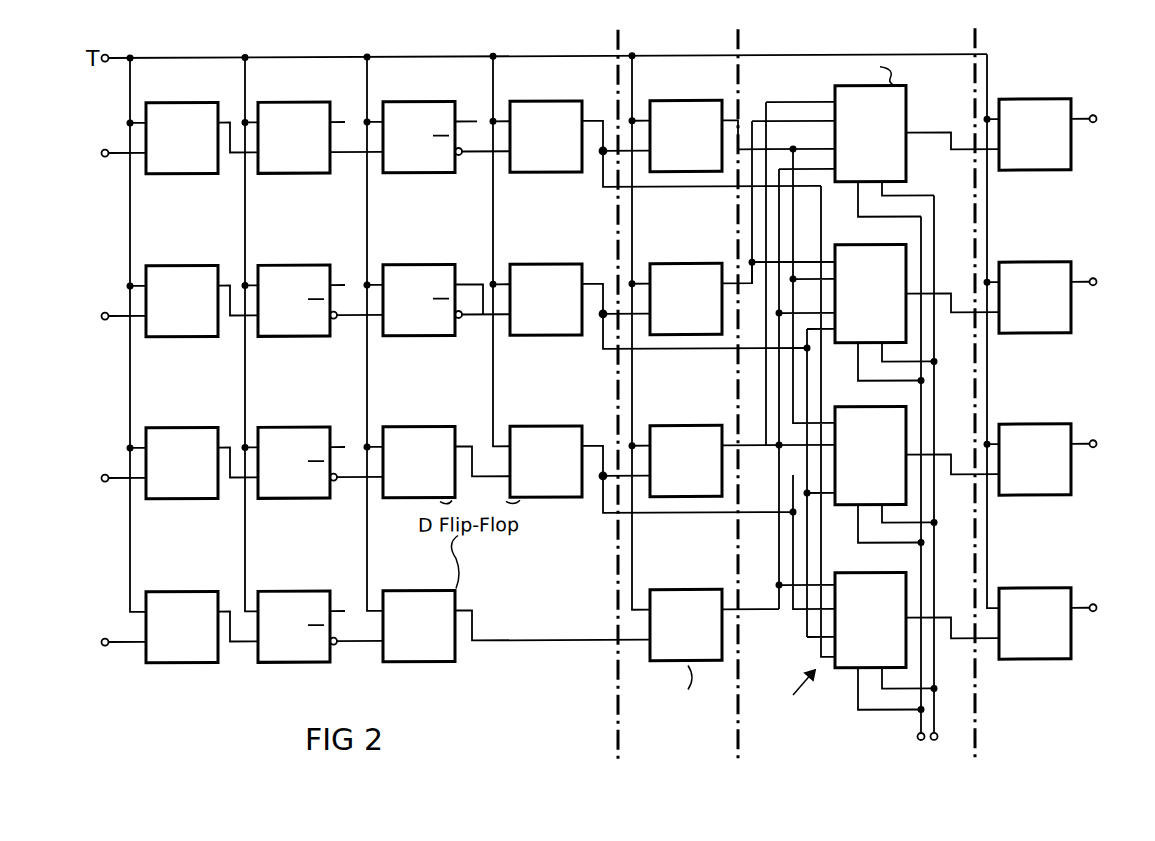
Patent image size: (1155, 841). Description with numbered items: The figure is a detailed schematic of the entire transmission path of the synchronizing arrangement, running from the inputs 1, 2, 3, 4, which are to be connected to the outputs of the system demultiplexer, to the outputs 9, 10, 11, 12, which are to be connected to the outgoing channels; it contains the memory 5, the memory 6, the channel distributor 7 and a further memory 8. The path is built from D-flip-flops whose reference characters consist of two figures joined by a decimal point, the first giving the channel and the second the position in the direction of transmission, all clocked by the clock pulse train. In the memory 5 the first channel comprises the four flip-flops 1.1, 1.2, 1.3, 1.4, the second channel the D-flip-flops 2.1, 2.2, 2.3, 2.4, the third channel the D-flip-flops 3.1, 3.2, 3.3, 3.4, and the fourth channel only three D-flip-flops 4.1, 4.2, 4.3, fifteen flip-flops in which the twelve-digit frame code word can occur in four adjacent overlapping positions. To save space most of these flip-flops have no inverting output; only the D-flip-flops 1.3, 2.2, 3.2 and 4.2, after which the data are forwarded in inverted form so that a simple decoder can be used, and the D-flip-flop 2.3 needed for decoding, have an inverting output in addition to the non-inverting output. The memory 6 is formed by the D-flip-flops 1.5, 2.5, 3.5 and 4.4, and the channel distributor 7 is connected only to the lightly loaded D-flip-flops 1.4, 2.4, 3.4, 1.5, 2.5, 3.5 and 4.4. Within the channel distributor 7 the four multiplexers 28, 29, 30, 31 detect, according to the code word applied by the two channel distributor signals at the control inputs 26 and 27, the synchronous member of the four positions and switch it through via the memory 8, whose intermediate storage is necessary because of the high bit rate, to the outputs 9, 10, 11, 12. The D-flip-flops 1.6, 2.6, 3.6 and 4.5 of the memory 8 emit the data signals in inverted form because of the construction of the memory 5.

The input 1 is at (116, 153).
The input 2 is at (116, 316).
The input 3 is at (116, 478).
The input 4 is at (116, 642).
The D-flip-flop 1.1 is at (202, 122).
The D-flip-flop 1.2 is at (320, 123).
The D-flip-flop 1.3 is at (446, 122).
The D-flip-flop 1.4 is at (665, 128).
The D-flip-flop 1.5 is at (742, 121).
The D-flip-flop 1.6 is at (1035, 119).
The D-flip-flop 2.1 is at (202, 285).
The D-flip-flop 2.2 is at (320, 286).
The D-flip-flop 2.3 is at (446, 285).
The D-flip-flop 2.4 is at (658, 291).
The D-flip-flop 2.5 is at (742, 284).
The D-flip-flop 2.6 is at (1035, 282).
The D-flip-flop 3.1 is at (202, 447).
The D-flip-flop 3.2 is at (320, 448).
The D-flip-flop 3.3 is at (446, 447).
The D-flip-flop 3.4 is at (651, 454).
The D-flip-flop 3.5 is at (742, 446).
The D-flip-flop 3.6 is at (1035, 444).
The D-flip-flop 4.1 is at (202, 611).
The D-flip-flop 4.2 is at (320, 612).
The D-flip-flop 4.3 is at (516, 611).
The D-flip-flop 4.4 is at (714, 610).
The D-flip-flop 4.5 is at (1035, 608).
The memory 5 is at (344, 384).
The memory 6 is at (660, 386).
The channel distributor 7 is at (966, 388).
The memory 8 is at (1112, 391).
The output 9 is at (1093, 119).
The output 10 is at (1099, 282).
The output 11 is at (1099, 444).
The output 12 is at (1099, 608).
The control input 26 is at (907, 495).
The control input 27 is at (950, 484).
The multiplexer 28 is at (917, 151).
The multiplexer 29 is at (917, 312).
The multiplexer 30 is at (917, 474).
The multiplexer 31 is at (917, 641).